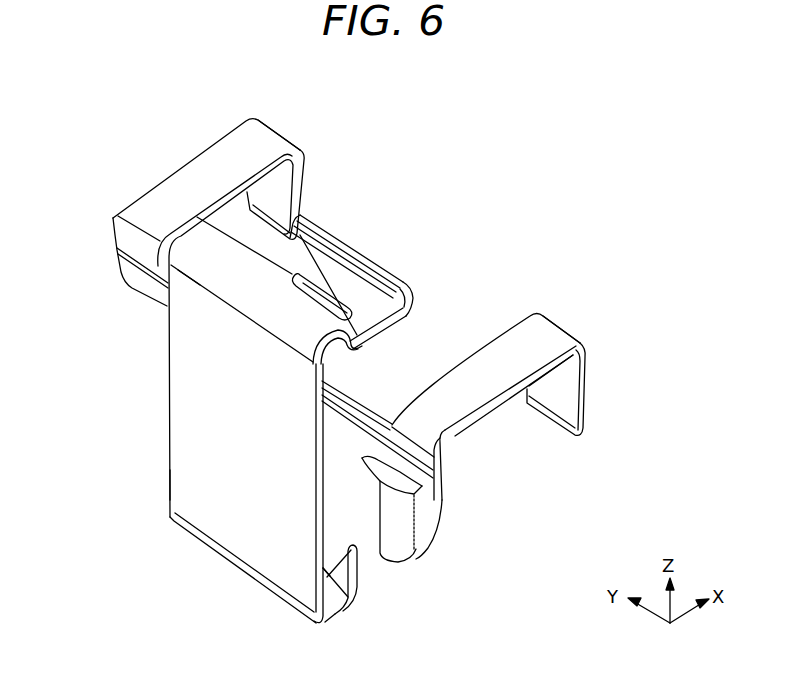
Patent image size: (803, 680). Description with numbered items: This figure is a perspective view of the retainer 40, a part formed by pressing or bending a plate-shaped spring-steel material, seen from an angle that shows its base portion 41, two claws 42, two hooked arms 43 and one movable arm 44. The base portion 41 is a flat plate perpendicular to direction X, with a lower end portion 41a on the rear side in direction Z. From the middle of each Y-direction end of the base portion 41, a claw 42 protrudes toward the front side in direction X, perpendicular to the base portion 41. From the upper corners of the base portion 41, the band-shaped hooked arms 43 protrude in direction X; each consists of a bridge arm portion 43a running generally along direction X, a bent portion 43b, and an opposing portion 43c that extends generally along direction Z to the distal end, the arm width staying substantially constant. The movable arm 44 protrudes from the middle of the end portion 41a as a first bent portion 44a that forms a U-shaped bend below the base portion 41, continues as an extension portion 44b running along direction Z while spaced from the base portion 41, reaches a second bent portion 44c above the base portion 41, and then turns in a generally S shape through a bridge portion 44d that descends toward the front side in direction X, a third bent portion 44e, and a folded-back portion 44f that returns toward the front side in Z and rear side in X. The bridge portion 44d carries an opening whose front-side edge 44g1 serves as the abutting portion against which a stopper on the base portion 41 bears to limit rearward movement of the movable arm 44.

The retainer 40 is at (573, 141).
The base portion 41 is at (358, 564).
The end portion 41a is at (325, 569).
The claw 42 is at (430, 522).
The hooked arm 43 is at (106, 221).
The bridge arm portion 43a is at (188, 177).
The bent portion 43b is at (272, 137).
The opposing portion 43c is at (285, 182).
The movable arm 44 is at (170, 423).
The first bent portion 44a is at (352, 608).
The extension portion 44b is at (187, 477).
The second bent portion 44c is at (227, 278).
The bridge portion 44d is at (373, 318).
The third bent portion 44e is at (414, 292).
The folded-back portion 44f is at (382, 272).
The edge 44g1 is at (327, 277).